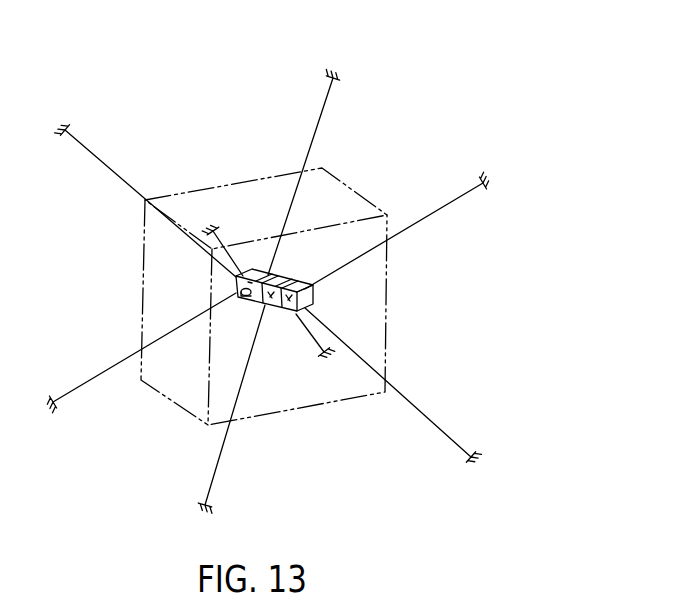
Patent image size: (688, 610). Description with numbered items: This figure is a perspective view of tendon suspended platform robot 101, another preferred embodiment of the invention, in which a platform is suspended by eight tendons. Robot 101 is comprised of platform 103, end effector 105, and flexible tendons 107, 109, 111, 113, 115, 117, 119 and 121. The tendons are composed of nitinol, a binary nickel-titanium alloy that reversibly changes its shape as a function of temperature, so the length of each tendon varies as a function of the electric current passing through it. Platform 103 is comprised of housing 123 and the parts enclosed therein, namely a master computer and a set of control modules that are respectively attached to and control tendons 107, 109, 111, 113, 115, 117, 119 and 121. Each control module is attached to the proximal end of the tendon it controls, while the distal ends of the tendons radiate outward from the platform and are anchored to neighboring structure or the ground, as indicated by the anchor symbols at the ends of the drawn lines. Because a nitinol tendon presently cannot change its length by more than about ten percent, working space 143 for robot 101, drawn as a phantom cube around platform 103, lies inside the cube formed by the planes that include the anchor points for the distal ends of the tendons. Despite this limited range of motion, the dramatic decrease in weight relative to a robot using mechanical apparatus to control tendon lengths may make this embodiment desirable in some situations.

The tendon suspended platform robot 101 is at (429, 53).
The platform 103 is at (268, 305).
The end effector 105 is at (238, 304).
The flexible tendon 107 is at (423, 217).
The flexible tendon 109 is at (409, 402).
The flexible tendon 111 is at (225, 242).
The flexible tendon 113 is at (227, 448).
The flexible tendon 115 is at (122, 180).
The flexible tendon 117 is at (104, 367).
The flexible tendon 119 is at (322, 122).
The flexible tendon 121 is at (311, 337).
The housing 123 is at (307, 297).
The working space 143 is at (280, 176).